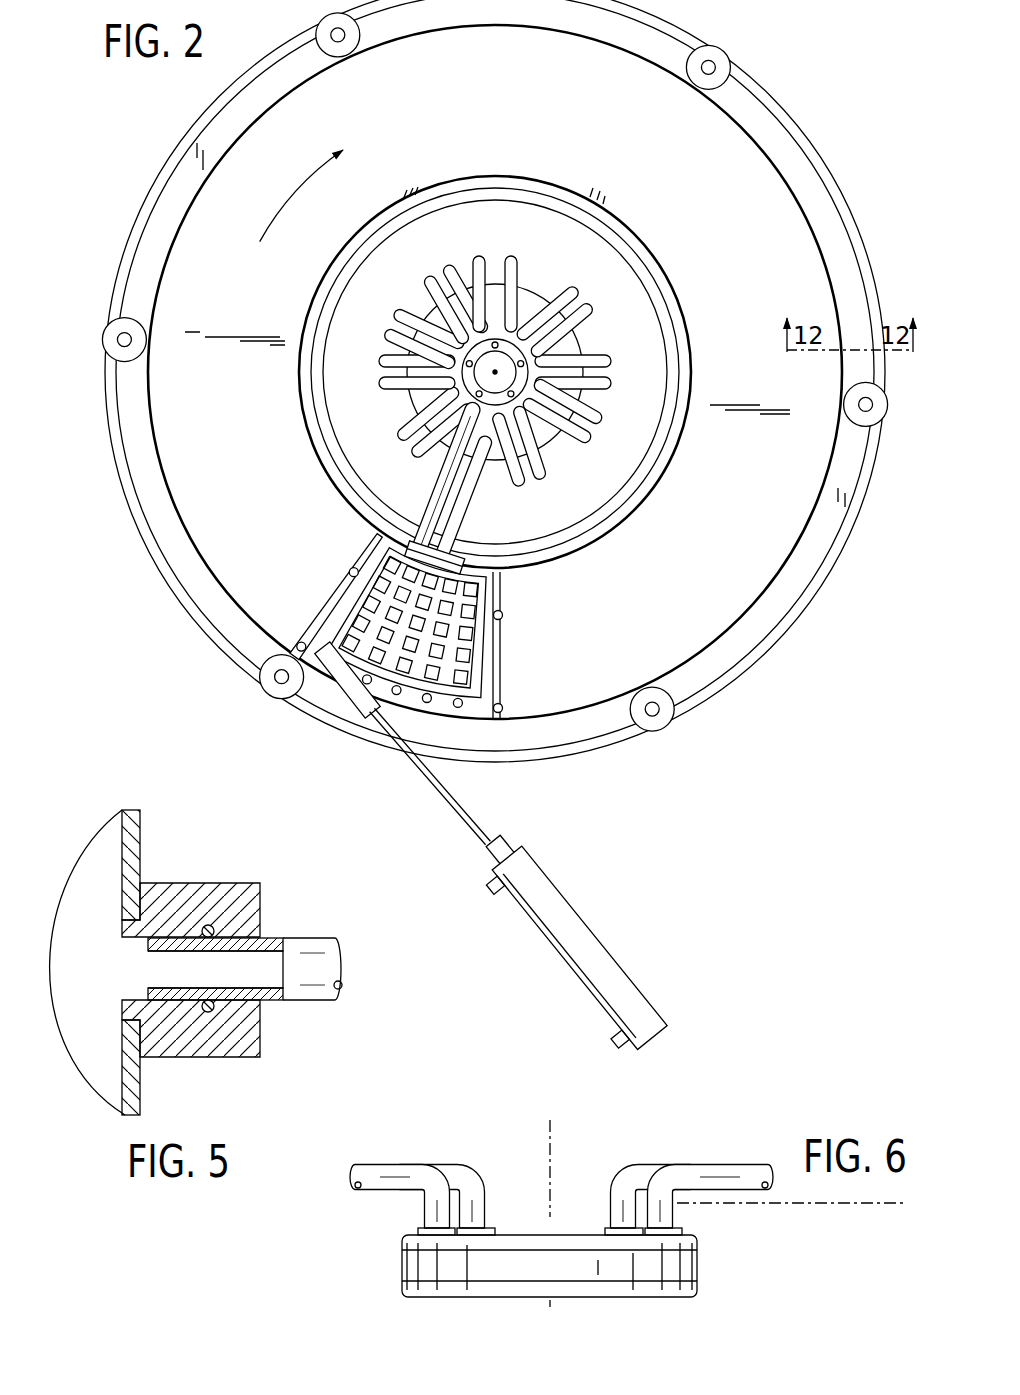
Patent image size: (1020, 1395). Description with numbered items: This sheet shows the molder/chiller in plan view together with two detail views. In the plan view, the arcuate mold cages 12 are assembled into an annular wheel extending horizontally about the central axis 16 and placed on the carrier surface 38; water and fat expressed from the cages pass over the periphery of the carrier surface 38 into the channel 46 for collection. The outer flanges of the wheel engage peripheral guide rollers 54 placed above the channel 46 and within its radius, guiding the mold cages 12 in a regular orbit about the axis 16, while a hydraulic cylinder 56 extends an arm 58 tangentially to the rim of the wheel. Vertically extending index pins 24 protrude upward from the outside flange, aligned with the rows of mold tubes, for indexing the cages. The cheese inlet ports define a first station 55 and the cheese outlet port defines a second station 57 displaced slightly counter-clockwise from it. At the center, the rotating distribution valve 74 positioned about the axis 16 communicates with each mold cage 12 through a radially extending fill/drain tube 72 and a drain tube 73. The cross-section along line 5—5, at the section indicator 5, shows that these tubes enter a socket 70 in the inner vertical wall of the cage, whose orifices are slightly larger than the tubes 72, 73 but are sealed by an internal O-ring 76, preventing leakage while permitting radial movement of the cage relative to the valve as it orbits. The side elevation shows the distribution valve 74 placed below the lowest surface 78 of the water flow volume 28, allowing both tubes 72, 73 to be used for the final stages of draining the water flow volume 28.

In FIG. 2, the section line for FIG. 5 is at (440, 530).
In FIG. 2, the mold cage 12 is at (506, 641).
In FIG. 2, the central axis 16 is at (497, 368).
In FIG. 6, the central axis 16 is at (548, 1152).
In FIG. 2, the index pins 24 is at (431, 703).
In FIG. 5, the water flow volume 28 is at (104, 987).
In FIG. 2, the carrier surface 38 is at (738, 525).
In FIG. 2, the channel 46 is at (650, 459).
In FIG. 2, the peripheral guide rollers 54 is at (262, 690).
In FIG. 2, the first station 55 is at (306, 722).
In FIG. 2, the hydraulic cylinder 56 is at (557, 897).
In FIG. 2, the second station 57 is at (500, 778).
In FIG. 2, the arm 58 is at (458, 815).
In FIG. 5, the socket 70 is at (200, 883).
In FIG. 2, the fill/drain tube 72 is at (468, 503).
In FIG. 5, the fill/drain tube 72 is at (320, 983).
In FIG. 6, the fill/drain tube 72 is at (397, 1172).
In FIG. 2, the drain tube 73 is at (443, 486).
In FIG. 6, the drain tube 73 is at (472, 1175).
In FIG. 2, the central distribution valve 74 is at (586, 336).
In FIG. 6, the central distribution valve 74 is at (716, 1265).
In FIG. 5, the O-ring 76 is at (261, 912).
In FIG. 6, the lowest surface 78 is at (825, 1205).